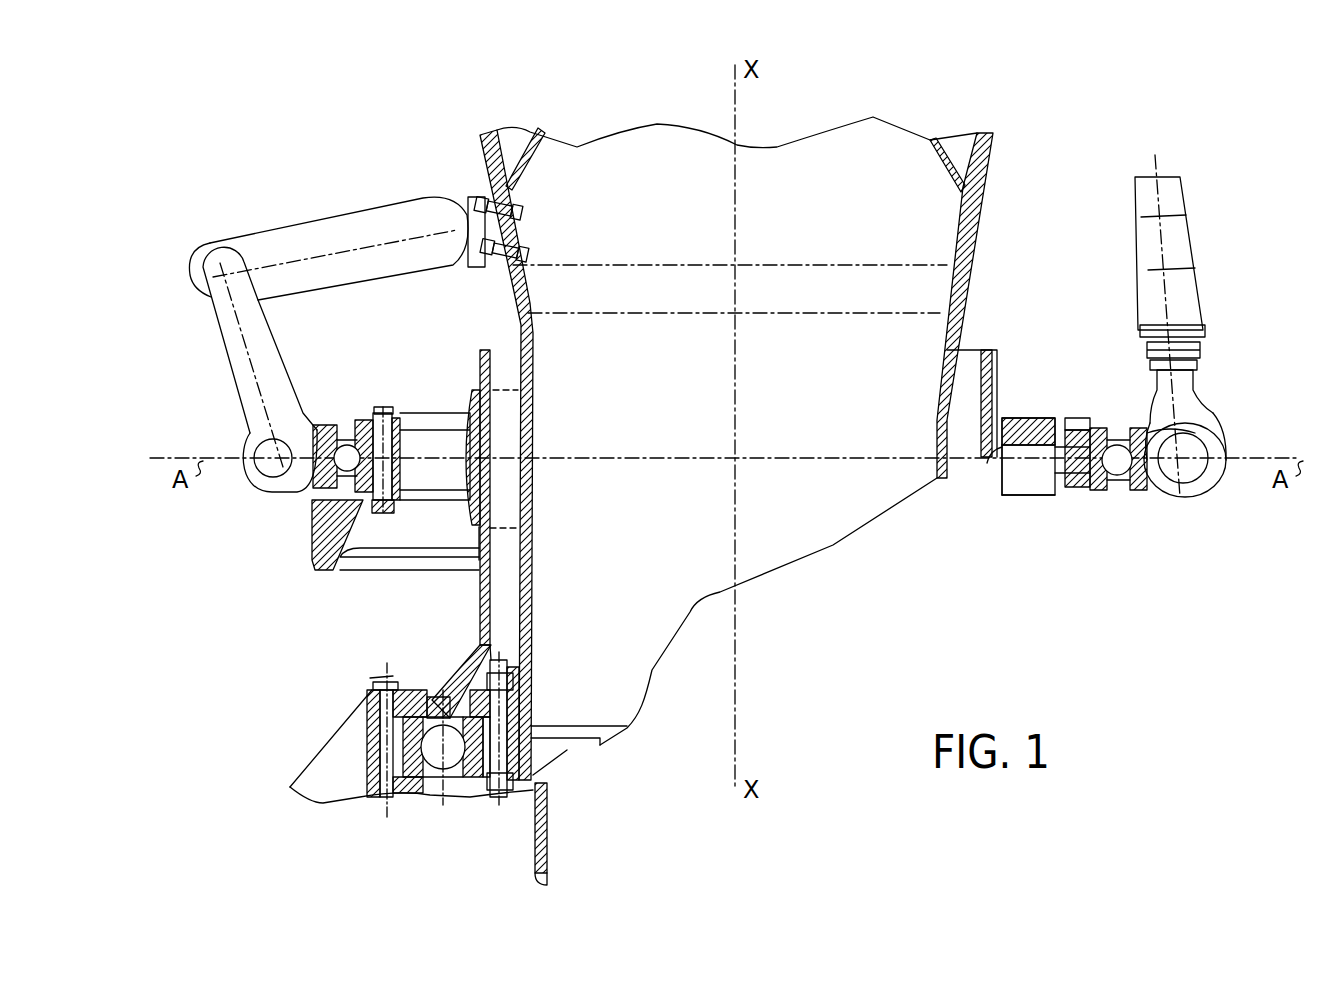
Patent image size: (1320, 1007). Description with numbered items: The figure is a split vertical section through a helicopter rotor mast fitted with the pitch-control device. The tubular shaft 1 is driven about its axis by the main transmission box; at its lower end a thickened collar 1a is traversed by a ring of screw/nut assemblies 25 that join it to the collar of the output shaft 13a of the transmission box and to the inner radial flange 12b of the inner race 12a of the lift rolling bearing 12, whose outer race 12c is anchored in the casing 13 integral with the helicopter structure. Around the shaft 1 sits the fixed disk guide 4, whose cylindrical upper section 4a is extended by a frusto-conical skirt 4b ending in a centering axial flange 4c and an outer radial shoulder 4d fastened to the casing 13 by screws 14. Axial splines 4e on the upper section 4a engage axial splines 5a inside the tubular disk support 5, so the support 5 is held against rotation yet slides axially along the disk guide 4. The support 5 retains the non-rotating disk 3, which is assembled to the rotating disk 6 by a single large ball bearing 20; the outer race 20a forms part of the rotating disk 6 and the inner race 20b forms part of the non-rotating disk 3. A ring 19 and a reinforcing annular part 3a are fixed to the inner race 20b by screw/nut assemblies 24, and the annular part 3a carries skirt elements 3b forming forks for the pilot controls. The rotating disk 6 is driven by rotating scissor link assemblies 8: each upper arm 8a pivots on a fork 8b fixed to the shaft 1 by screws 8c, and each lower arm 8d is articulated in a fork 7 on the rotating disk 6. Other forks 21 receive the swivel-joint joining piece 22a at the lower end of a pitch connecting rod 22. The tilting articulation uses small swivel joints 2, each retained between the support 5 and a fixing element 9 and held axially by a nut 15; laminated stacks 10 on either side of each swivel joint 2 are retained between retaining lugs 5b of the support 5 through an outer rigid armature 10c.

The tubular shaft 1 is at (533, 400).
The collar 1a is at (473, 693).
The swivel joint 2 is at (1025, 418).
The non-rotating disk 3 is at (313, 566).
The annular part 3a is at (400, 488).
The skirt elements 3b is at (325, 527).
The disk guide 4 is at (483, 348).
The upper section 4a is at (488, 535).
The frusto-conical skirt 4b is at (463, 693).
The axial flange 4c is at (425, 697).
The outer radial shoulder 4d is at (393, 678).
The axial splines 4e is at (985, 350).
The disk support 5 is at (470, 405).
The axial splines 5a is at (488, 487).
The retaining lugs 5b is at (1020, 490).
The rotating disk 6 is at (322, 425).
The fork 7 is at (293, 470).
The rotating scissor link assembly 8 is at (186, 257).
The upper arm 8a is at (330, 232).
The fork 8b is at (462, 200).
The screws 8c is at (522, 205).
The lower arm 8d is at (245, 368).
The fixing element 9 is at (1068, 482).
The stack 10 is at (1028, 431).
The outer rigid armature 10c is at (1035, 495).
The lift rolling bearing 12 is at (453, 712).
The inner race 12a is at (478, 780).
The inner radial flange 12b is at (545, 740).
The outer race 12c is at (423, 795).
The casing 13 is at (370, 747).
The output shaft 13a is at (550, 822).
The screws 14 is at (378, 690).
The nut 15 is at (1005, 475).
The ring 19 is at (383, 407).
The ball bearing 20 is at (350, 440).
The outer race 20a is at (1165, 472).
The inner race 20b is at (1115, 428).
The fork 21 is at (1165, 482).
The pitch connecting rod 22 is at (1200, 262).
The swivel-joint joining piece 22a is at (1190, 430).
The screw/nut assemblies 24 is at (383, 513).
The screw/nut assemblies 25 is at (510, 675).